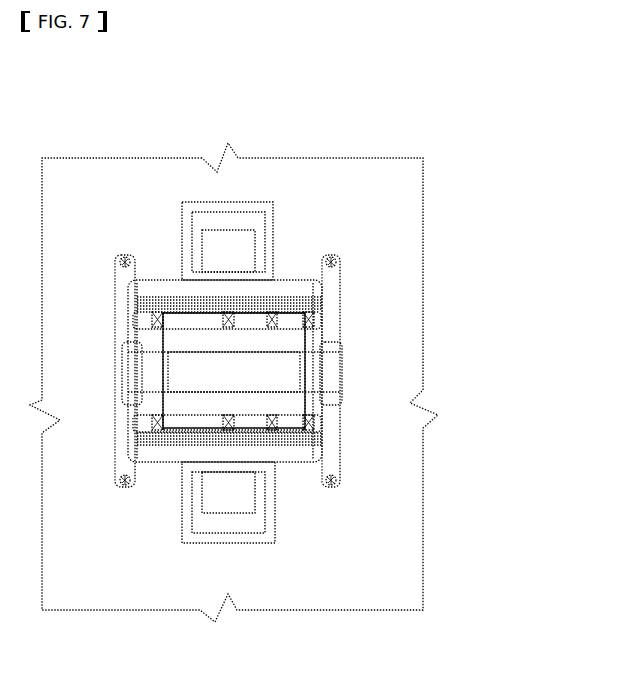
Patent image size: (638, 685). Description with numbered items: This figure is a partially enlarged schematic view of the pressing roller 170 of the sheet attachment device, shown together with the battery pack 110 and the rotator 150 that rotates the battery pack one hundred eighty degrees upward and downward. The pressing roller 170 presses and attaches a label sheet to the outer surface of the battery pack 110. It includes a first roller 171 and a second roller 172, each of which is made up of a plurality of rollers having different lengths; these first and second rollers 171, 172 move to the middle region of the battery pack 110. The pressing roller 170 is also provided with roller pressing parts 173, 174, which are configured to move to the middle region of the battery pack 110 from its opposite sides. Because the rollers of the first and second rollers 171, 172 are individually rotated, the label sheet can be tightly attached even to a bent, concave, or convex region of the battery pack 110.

The battery pack 110 is at (293, 383).
The rotator 150 is at (340, 257).
The pressing roller 170 is at (190, 197).
The first roller 171 is at (247, 318).
The second roller 172 is at (247, 423).
The roller pressing part 173 is at (228, 277).
The roller pressing part 174 is at (230, 462).